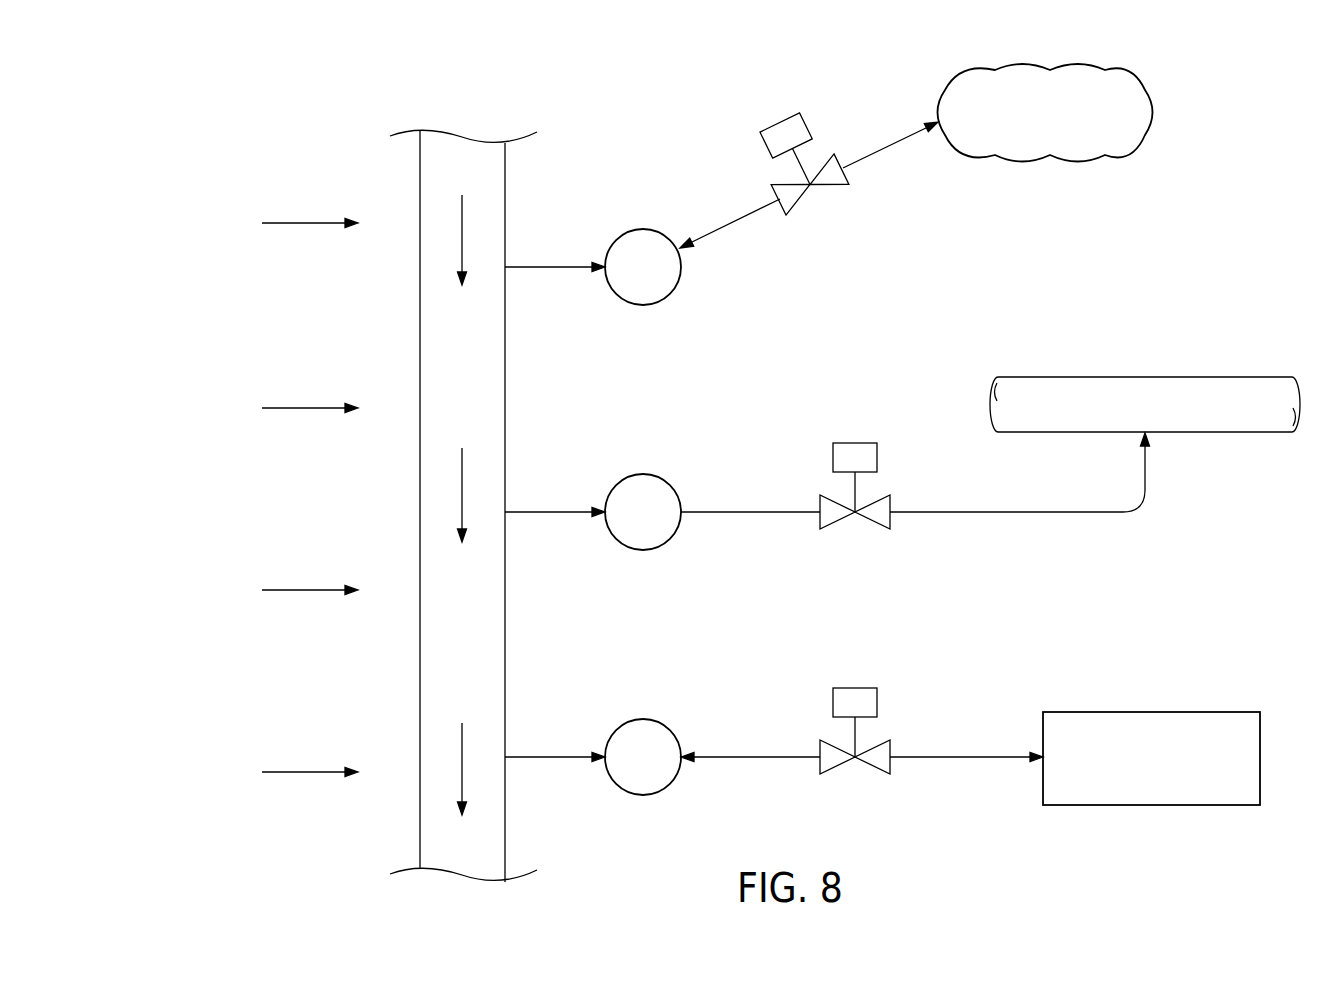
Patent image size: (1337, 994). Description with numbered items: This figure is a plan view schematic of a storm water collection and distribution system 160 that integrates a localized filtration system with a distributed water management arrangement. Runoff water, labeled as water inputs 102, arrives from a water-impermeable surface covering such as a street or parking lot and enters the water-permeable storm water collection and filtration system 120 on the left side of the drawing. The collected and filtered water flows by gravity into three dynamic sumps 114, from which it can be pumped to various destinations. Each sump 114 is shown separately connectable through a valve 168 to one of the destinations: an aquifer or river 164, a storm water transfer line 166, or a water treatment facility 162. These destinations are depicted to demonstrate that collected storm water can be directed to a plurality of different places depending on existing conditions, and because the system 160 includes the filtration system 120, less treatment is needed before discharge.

The water inputs 102 is at (216, 134).
The storm water collection and filtration system 120 is at (520, 187).
The storm water collection and distribution system 160 is at (725, 72).
The dynamic sump 114 is at (618, 300).
The valve 168 is at (803, 208).
The aquifer/river 164 is at (1093, 160).
The storm water transfer line 166 is at (1231, 377).
The water treatment facility 162 is at (1193, 712).